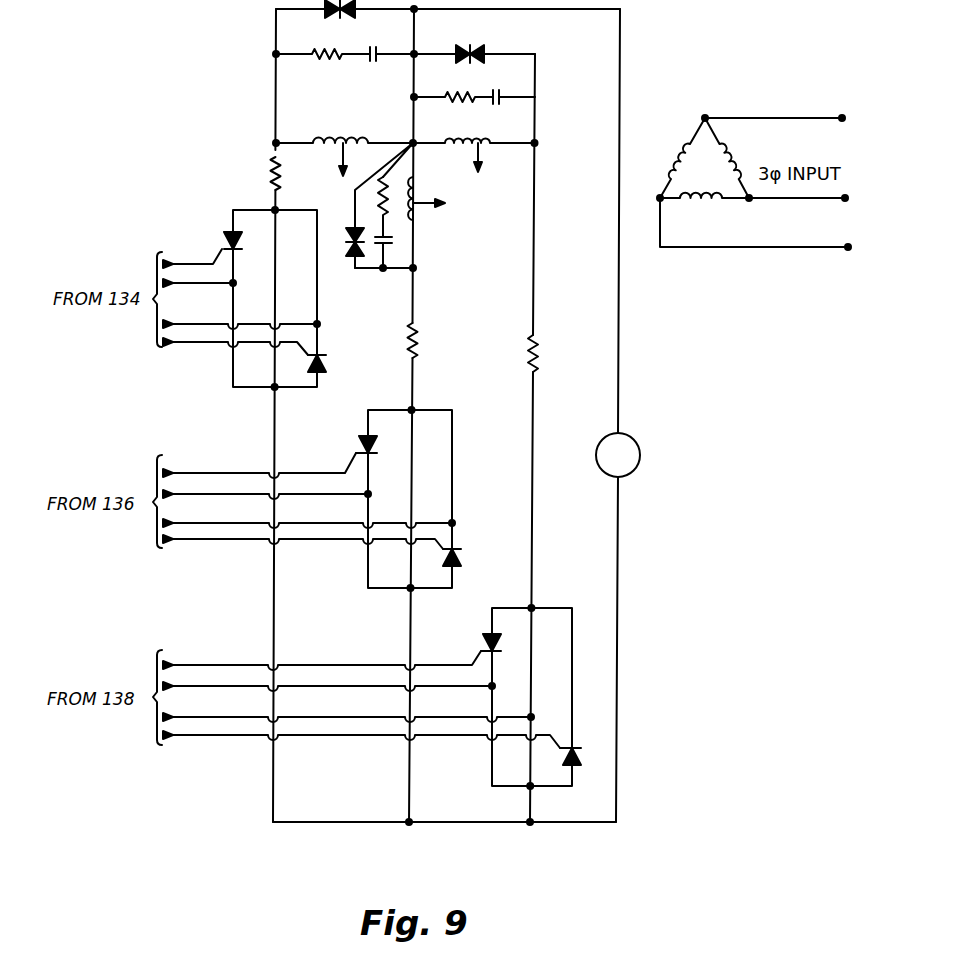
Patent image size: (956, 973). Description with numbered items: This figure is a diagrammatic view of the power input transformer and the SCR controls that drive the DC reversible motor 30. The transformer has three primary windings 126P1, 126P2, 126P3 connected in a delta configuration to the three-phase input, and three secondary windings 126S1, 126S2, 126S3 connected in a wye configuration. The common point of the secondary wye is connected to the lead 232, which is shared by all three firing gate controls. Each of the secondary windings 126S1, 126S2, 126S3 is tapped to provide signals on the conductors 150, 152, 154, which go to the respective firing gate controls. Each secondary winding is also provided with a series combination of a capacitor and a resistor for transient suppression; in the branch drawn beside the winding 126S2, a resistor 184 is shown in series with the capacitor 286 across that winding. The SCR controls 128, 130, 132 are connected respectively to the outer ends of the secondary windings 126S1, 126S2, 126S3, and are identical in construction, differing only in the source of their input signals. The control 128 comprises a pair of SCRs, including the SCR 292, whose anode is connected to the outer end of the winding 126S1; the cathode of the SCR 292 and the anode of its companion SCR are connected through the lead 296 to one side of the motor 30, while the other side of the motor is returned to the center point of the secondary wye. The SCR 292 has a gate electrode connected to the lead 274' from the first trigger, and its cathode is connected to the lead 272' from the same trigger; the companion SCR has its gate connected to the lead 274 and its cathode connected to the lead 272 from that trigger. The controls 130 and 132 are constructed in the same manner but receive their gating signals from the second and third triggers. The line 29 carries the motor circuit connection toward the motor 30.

The motor supply line 29 is at (620, 350).
The DC reversible motor 30 is at (633, 440).
The secondary winding 126S1 is at (347, 138).
The secondary winding 126S2 is at (419, 192).
The secondary winding 126S3 is at (493, 140).
The primary winding 126P1 is at (676, 162).
The primary winding 126P2 is at (728, 152).
The primary winding 126P3 is at (700, 204).
The SCR control 128 is at (220, 368).
The SCR control 130 is at (356, 556).
The SCR control 132 is at (481, 744).
The lead 150 is at (340, 163).
The conductor 152 is at (428, 206).
The conductor 154 is at (481, 162).
The resistor 184 is at (392, 212).
The lead 232 is at (404, 120).
The lead 272 is at (241, 315).
The lead 272' is at (199, 294).
The lead 274 is at (235, 355).
The lead 274' is at (187, 246).
The capacitor 286 is at (396, 243).
The SCR 292 is at (233, 228).
The lead 296 is at (272, 793).